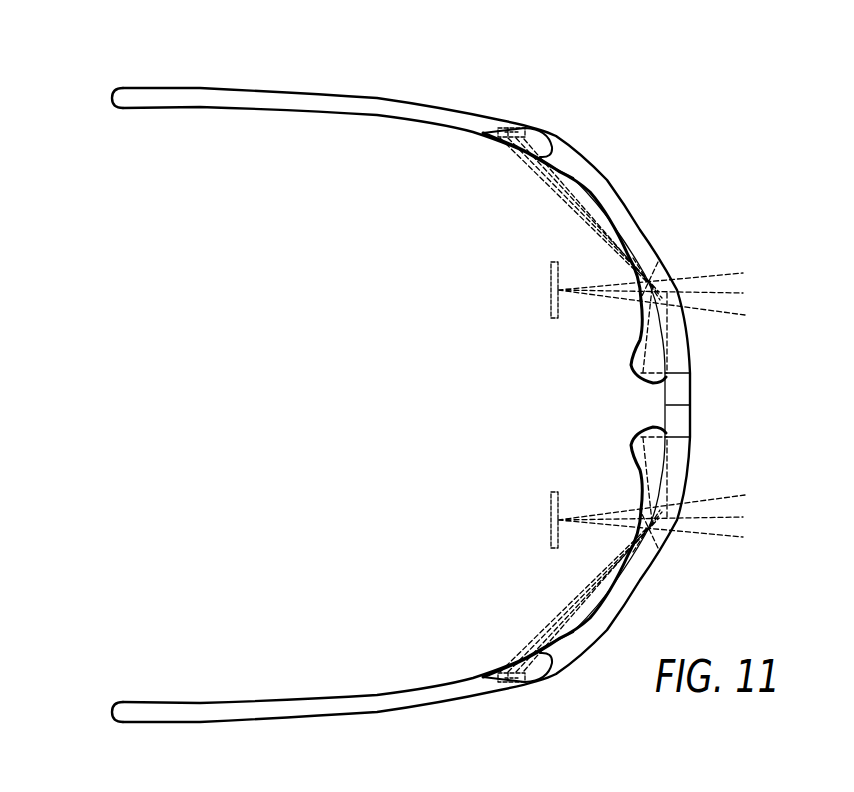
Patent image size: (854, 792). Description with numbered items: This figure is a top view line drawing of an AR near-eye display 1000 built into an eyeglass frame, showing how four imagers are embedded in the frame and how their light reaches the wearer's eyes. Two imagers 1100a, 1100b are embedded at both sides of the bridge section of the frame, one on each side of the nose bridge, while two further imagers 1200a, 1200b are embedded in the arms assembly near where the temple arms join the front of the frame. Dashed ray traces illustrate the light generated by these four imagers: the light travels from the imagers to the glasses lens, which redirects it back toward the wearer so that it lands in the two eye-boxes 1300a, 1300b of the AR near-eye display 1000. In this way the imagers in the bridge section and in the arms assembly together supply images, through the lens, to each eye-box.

The AR near-eye display 1000 is at (198, 70).
The imager 1100a is at (667, 437).
The imager 1100b is at (688, 373).
The imager 1200a is at (503, 682).
The imager 1200b is at (503, 128).
The eye-box 1300a is at (552, 503).
The eye-box 1300b is at (552, 285).